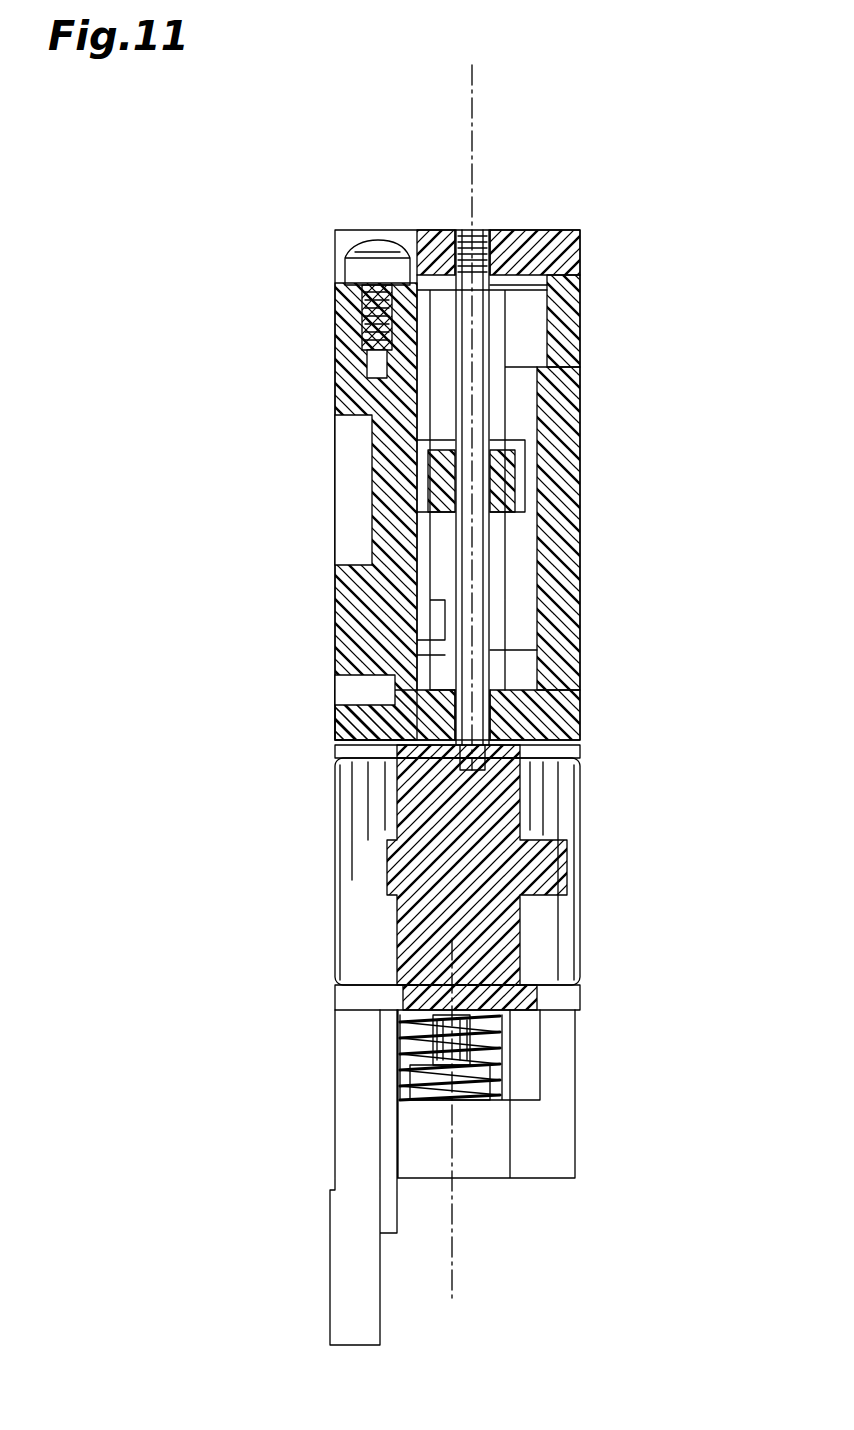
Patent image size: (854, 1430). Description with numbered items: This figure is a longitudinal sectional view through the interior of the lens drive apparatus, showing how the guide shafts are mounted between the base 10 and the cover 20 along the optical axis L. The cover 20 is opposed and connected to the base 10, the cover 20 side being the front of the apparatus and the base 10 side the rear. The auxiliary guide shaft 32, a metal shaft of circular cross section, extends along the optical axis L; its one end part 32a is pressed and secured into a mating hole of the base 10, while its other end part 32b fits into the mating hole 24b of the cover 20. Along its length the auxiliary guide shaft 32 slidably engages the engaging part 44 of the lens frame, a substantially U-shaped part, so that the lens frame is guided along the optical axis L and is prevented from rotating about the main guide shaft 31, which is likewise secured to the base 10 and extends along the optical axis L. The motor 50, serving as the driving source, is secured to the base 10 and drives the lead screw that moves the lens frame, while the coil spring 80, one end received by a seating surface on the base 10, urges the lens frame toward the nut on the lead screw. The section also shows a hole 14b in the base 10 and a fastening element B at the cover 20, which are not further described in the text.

The base 10 is at (595, 712).
The cover 20 is at (548, 230).
The mating hole 24b is at (456, 238).
The other end part 32b is at (486, 252).
The auxiliary guide shaft 32 is at (478, 585).
The engaging part 44 is at (578, 485).
The hole 14b is at (472, 702).
The bolt B is at (340, 236).
The one end part 32a is at (480, 757).
The motor 50 is at (355, 940).
The coil spring 80 is at (510, 1030).
The main guide shaft 31 is at (446, 1068).
The optical axis L is at (473, 100).